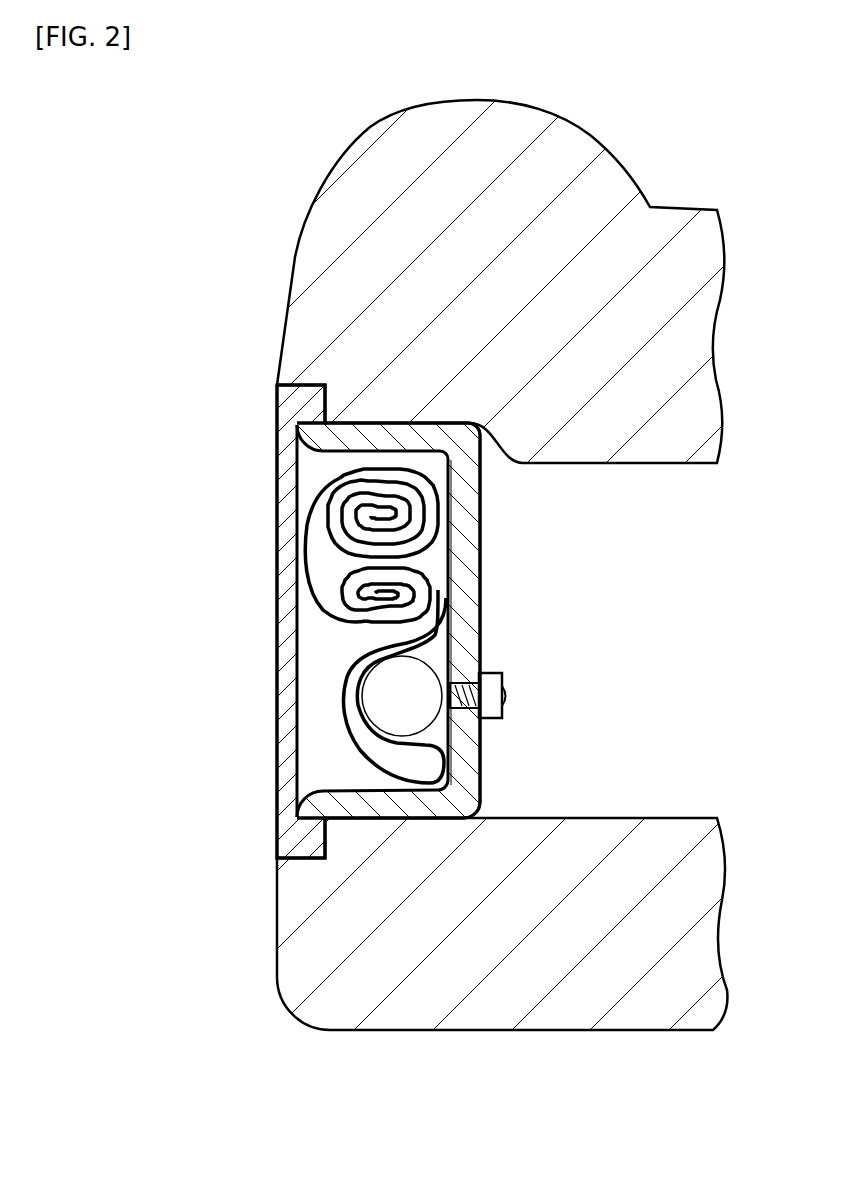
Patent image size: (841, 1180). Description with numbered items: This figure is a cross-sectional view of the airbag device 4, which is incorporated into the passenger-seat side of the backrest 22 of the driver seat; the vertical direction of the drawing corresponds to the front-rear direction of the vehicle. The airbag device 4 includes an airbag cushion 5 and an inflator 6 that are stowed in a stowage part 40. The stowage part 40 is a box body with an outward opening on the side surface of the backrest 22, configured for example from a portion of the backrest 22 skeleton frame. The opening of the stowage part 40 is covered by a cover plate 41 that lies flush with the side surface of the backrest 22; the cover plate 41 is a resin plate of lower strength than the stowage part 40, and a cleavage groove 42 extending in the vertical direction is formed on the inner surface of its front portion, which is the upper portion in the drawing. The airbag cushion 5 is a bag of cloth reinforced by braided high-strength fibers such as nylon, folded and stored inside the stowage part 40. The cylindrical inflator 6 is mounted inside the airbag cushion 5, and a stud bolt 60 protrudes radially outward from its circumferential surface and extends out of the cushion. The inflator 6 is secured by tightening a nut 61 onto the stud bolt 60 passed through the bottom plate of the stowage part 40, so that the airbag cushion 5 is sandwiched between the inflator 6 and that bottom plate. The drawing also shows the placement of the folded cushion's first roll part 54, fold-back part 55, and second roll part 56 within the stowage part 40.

The backrest 22 is at (323, 178).
The airbag device 4 is at (261, 690).
The stowage part 40 is at (478, 560).
The cover plate 41 is at (286, 593).
The cleavage groove 42 is at (297, 457).
The airbag cushion 5 is at (322, 683).
The first roll part 54 is at (323, 513).
The fold-back part 55 is at (353, 742).
The second roll part 56 is at (353, 613).
The inflator 6 is at (433, 660).
The stud bolt 60 is at (508, 693).
The nut 61 is at (490, 720).